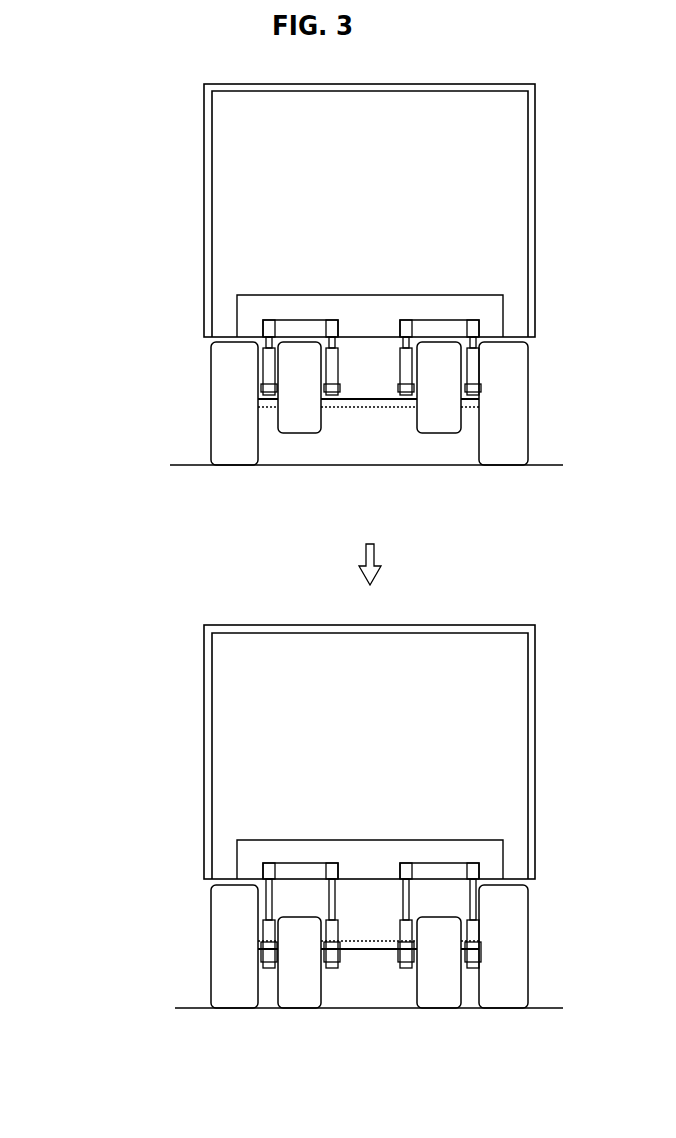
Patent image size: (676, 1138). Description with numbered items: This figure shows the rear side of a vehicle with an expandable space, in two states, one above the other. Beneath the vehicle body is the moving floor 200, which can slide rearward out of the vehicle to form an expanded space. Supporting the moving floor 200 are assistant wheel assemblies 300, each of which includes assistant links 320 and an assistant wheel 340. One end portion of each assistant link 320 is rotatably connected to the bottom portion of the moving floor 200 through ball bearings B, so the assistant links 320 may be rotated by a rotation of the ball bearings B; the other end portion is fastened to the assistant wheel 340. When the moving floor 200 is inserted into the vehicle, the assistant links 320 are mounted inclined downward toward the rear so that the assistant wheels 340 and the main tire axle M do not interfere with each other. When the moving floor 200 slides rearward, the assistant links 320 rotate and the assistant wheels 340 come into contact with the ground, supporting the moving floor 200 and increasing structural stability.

The moving floor 200 is at (245, 303).
The ball bearings B is at (268, 325).
The assistant wheel assembly 300 is at (290, 694).
The assistant links 320 is at (268, 367).
The assistant wheel 340 is at (287, 420).
The main tire axle M is at (395, 405).